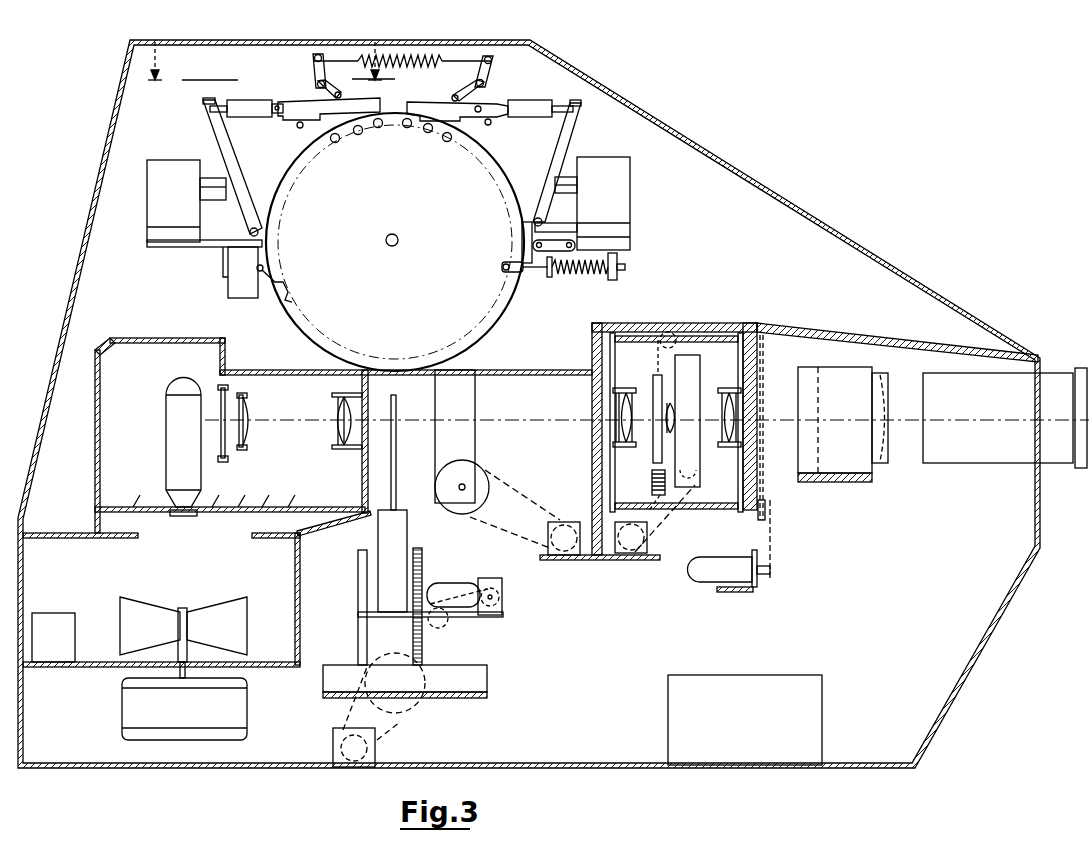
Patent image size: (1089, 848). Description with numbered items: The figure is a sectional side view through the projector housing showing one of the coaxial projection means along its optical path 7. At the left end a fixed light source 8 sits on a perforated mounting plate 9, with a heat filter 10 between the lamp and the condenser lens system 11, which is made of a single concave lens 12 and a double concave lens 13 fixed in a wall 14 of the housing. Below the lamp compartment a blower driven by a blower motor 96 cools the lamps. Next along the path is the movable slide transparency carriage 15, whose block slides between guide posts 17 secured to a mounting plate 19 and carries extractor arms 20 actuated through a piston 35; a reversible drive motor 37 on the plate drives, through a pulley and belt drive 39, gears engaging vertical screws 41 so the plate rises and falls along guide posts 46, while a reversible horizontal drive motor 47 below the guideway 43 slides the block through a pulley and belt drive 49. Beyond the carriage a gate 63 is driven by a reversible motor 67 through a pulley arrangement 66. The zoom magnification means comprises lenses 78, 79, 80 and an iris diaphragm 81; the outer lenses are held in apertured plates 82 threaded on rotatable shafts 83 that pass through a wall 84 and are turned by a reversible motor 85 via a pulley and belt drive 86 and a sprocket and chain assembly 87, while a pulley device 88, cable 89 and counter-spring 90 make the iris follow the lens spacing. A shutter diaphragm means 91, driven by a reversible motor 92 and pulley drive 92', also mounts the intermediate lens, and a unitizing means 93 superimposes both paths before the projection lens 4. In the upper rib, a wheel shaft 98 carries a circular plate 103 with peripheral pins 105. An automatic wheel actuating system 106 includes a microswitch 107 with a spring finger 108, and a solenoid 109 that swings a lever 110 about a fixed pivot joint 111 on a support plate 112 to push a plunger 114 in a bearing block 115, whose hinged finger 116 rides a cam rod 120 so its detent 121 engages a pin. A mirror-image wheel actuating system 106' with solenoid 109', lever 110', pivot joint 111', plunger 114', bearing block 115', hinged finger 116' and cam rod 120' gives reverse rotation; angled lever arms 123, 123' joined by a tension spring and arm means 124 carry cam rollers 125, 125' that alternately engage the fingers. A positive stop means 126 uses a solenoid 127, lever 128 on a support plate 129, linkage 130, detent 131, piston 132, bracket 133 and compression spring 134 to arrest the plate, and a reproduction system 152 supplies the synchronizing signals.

The projection lens 4 is at (1062, 373).
The optical path 7 is at (276, 422).
The light source 8 is at (166, 431).
The perforated mounting plate 9 is at (74, 533).
The heat filter 10 is at (214, 452).
The condenser lens system 11 is at (294, 401).
The single concave lens 12 is at (250, 440).
The double concave lens 13 is at (331, 435).
The wall 14 is at (270, 246).
The movable slide transparency carriage 15 is at (345, 572).
The guide posts 17 is at (402, 534).
The mounting plate 19 is at (357, 614).
The extractor arms 20 is at (396, 412).
The piston 35 is at (396, 505).
The reversible drive motor 37 is at (440, 592).
The pulley and belt drive 39 is at (455, 627).
The vertical screws 41 is at (422, 650).
The guideway 43 is at (487, 677).
The guide posts 46 is at (358, 650).
The reversible horizontal drive motor 47 is at (347, 741).
The pulley and belt drive 49 is at (392, 736).
The gate 63 is at (511, 406).
The pulley arrangement 66 is at (540, 512).
The reversible motor 67 is at (566, 556).
The lens 78 is at (640, 384).
The intermediate lens 79 is at (671, 406).
The lens 80 is at (721, 394).
The iris diaphragm 81 is at (653, 456).
The apertured plates 82 is at (613, 476).
The rotatable shafts 83 is at (625, 340).
The wall 84 is at (760, 514).
The reversible motor 85 is at (698, 582).
The pulley and belt drive 86 is at (770, 546).
The sprocket and chain assembly 87 is at (801, 508).
The pulley device 88 is at (661, 345).
The cable 89 is at (694, 331).
The counter-spring 90 is at (652, 486).
The shutter diaphragm means 91 is at (700, 371).
The reversible motor 92 is at (633, 554).
The pulley drive 92' is at (665, 518).
The unitizing means 93 is at (866, 491).
The blower motor 96 is at (125, 698).
The wheel shaft 98 is at (397, 246).
The circular plate 103 is at (311, 336).
The pins 105 is at (337, 143).
The automatic wheel actuating system 106 is at (106, 95).
The wheel actuating system 106' is at (652, 158).
The microswitch 107 is at (228, 280).
The spring finger 108 is at (270, 284).
The solenoid 109 is at (167, 199).
The solenoid 109' is at (620, 203).
The lever 110 is at (234, 167).
The lever 110' is at (578, 163).
The fixed pivot joint 111 is at (290, 216).
The fixed pivot joint 111' is at (500, 229).
The support plate 112 is at (232, 241).
The plunger 114 is at (241, 99).
The plunger 114' is at (565, 95).
The bearing block 115 is at (254, 125).
The bearing block 115' is at (530, 95).
The hinged finger 116 is at (322, 100).
The hinged finger 116' is at (471, 130).
The cam rod 120 is at (283, 134).
The cam rod 120' is at (516, 131).
The detent 121 is at (370, 114).
The angled lever arm 123 is at (304, 76).
The angled lever arm 123' is at (496, 78).
The tension spring and arm means 124 is at (423, 56).
The cam roller 125 is at (364, 89).
The cam roller 125' is at (432, 89).
The positive stop means 126 is at (711, 286).
The solenoid 127 is at (631, 240).
The lever 128 is at (535, 227).
The support plate 129 is at (631, 226).
The linkage 130 is at (533, 245).
The detent 131 is at (516, 273).
The piston 132 is at (556, 278).
The bracket 133 is at (626, 259).
The compression spring 134 is at (613, 281).
The reproduction system 152 is at (60, 613).